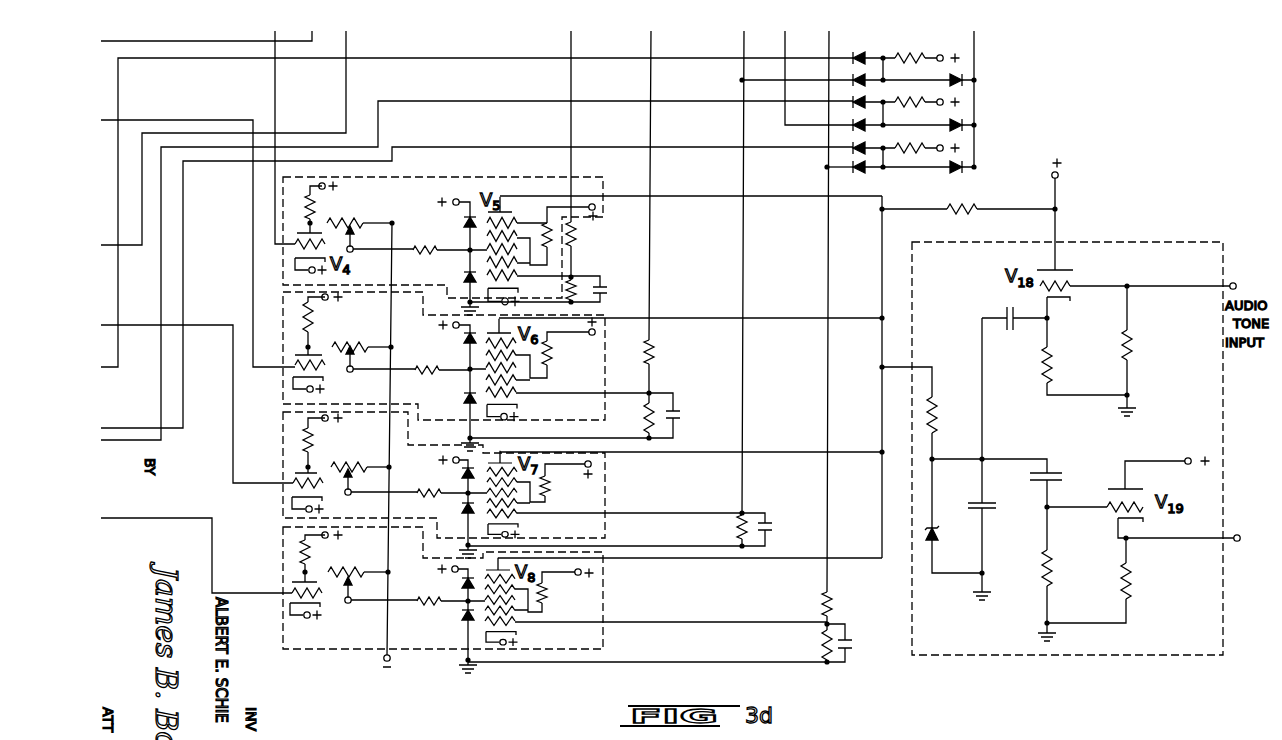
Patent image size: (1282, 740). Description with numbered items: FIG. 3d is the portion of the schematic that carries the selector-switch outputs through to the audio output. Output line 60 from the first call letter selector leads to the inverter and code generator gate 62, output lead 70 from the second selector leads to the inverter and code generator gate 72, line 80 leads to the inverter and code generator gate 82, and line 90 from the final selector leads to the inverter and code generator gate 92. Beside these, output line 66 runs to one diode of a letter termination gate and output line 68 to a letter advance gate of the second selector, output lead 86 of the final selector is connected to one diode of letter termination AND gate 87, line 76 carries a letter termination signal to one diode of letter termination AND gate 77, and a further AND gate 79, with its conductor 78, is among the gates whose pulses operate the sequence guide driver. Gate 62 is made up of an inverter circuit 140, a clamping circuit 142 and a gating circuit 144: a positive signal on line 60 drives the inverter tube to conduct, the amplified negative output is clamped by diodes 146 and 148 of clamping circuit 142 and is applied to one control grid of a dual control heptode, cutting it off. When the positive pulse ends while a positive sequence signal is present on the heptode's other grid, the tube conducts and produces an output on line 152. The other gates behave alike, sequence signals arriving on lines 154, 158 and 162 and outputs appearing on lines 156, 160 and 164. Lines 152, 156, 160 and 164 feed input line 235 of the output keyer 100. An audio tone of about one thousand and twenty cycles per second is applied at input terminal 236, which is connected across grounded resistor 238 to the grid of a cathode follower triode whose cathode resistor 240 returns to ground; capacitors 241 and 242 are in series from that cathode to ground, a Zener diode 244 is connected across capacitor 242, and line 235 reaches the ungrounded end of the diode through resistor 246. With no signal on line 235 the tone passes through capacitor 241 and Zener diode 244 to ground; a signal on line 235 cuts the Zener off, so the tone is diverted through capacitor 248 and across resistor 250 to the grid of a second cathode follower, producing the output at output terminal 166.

The output line 60 is at (281, 85).
The inverter and code generator gate 62 is at (402, 201).
The output line 66 is at (143, 42).
The output line 68 is at (346, 75).
The output lead 70 is at (253, 298).
The inverter and code generator gate 72 is at (418, 333).
The line 76 is at (375, 58).
The letter termination AND gate 77 is at (857, 69).
The conductor 78 is at (443, 92).
The AND gate 79 is at (918, 124).
The line 80 is at (233, 415).
The inverter and code generator gate 82 is at (427, 478).
The output lead 86 is at (448, 138).
The letter termination AND gate 87 is at (900, 157).
The line 90 is at (212, 549).
The inverter and code generator gate 92 is at (417, 578).
The output keyer 100 is at (1135, 242).
The inverter circuit 140 is at (359, 226).
The clamping circuit 142 is at (411, 242).
The gating circuit 144 is at (539, 225).
The diode 146 is at (462, 222).
The diode 148 is at (462, 277).
The line 152 is at (670, 197).
The line 154 is at (650, 262).
The line 156 is at (676, 318).
The line 158 is at (742, 375).
The line 160 is at (658, 452).
The line 162 is at (827, 528).
The line 164 is at (765, 558).
The output terminal 166 is at (1237, 541).
The input line 235 is at (917, 367).
The input terminal 236 is at (1232, 283).
The grounded resistor 238 is at (1128, 332).
The cathode resistor 240 is at (1050, 370).
The capacitor 241 is at (1010, 332).
The capacitor 242 is at (992, 508).
The Zener diode 244 is at (935, 535).
The resistor 246 is at (935, 427).
The capacitor 248 is at (1052, 470).
The resistor 250 is at (1042, 567).